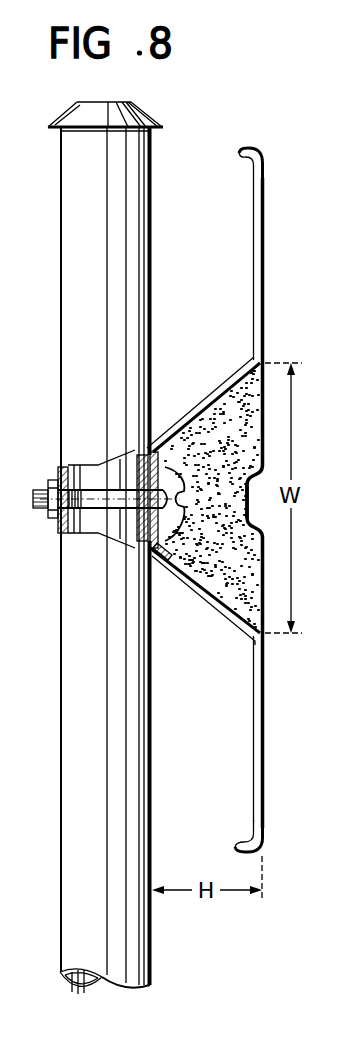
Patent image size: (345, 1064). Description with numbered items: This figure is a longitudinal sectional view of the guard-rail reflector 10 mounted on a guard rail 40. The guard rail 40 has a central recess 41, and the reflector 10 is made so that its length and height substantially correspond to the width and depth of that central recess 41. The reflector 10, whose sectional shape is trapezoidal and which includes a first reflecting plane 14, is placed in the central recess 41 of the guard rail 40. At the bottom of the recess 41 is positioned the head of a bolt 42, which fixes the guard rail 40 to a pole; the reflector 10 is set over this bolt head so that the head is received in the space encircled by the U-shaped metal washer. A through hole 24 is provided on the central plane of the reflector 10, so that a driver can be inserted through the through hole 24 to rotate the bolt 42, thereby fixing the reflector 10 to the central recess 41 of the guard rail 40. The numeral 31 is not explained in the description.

The reflector 10 is at (280, 482).
The first reflecting plane 14 is at (220, 504).
The through hole 24 is at (252, 507).
The lower bracket arm 31 is at (169, 560).
The guard rail 40 is at (266, 153).
The central recess 41 is at (215, 376).
The bolt 42 is at (90, 497).